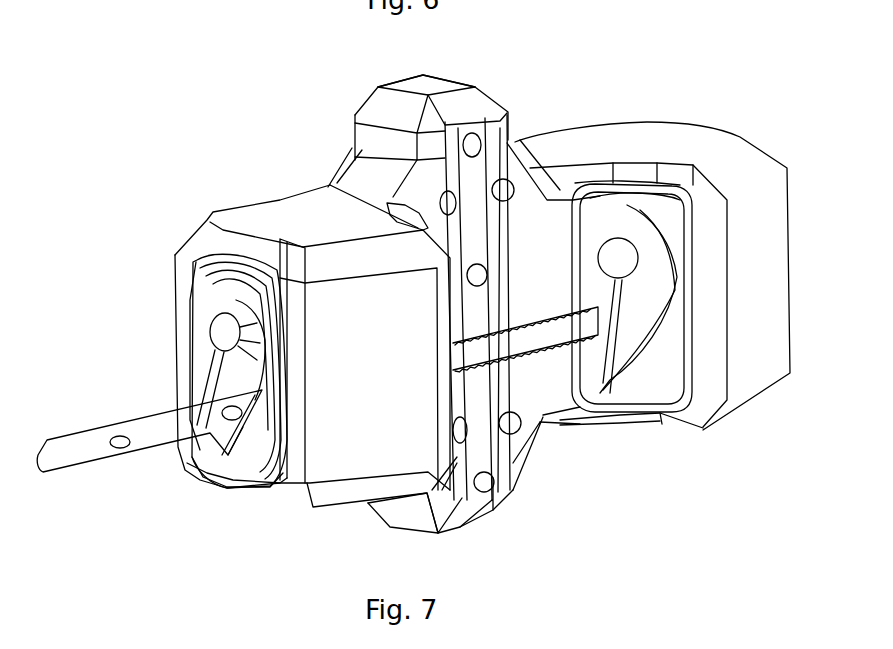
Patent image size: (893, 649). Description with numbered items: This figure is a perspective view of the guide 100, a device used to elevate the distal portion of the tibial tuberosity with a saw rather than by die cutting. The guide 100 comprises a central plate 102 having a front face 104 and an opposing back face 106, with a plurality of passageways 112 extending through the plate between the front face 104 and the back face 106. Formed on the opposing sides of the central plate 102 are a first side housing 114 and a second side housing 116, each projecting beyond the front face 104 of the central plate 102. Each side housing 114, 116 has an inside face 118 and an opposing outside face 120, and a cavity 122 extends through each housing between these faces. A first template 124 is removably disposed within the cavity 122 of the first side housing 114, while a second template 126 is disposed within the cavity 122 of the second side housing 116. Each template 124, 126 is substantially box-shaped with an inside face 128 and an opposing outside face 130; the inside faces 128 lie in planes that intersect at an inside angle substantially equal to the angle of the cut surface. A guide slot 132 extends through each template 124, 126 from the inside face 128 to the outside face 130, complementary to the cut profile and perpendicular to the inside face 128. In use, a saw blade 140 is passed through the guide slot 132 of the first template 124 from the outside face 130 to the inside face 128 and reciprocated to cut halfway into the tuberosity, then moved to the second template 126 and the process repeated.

The guide 100 is at (707, 107).
The central plate 102 is at (440, 83).
The front face 104 is at (507, 123).
The back face 106 is at (373, 90).
The passageways 112 is at (447, 200).
The first side housing 114 is at (345, 470).
The second side housing 116 is at (753, 377).
The inside face 118 is at (677, 173).
The outside face 120 is at (220, 240).
The cavity 122 is at (270, 262).
The first template 124 is at (253, 467).
The second template 126 is at (657, 397).
The inside face 128 is at (673, 347).
The outside face 130 is at (218, 300).
The guide slot 132 is at (262, 298).
The saw blade 140 is at (82, 455).